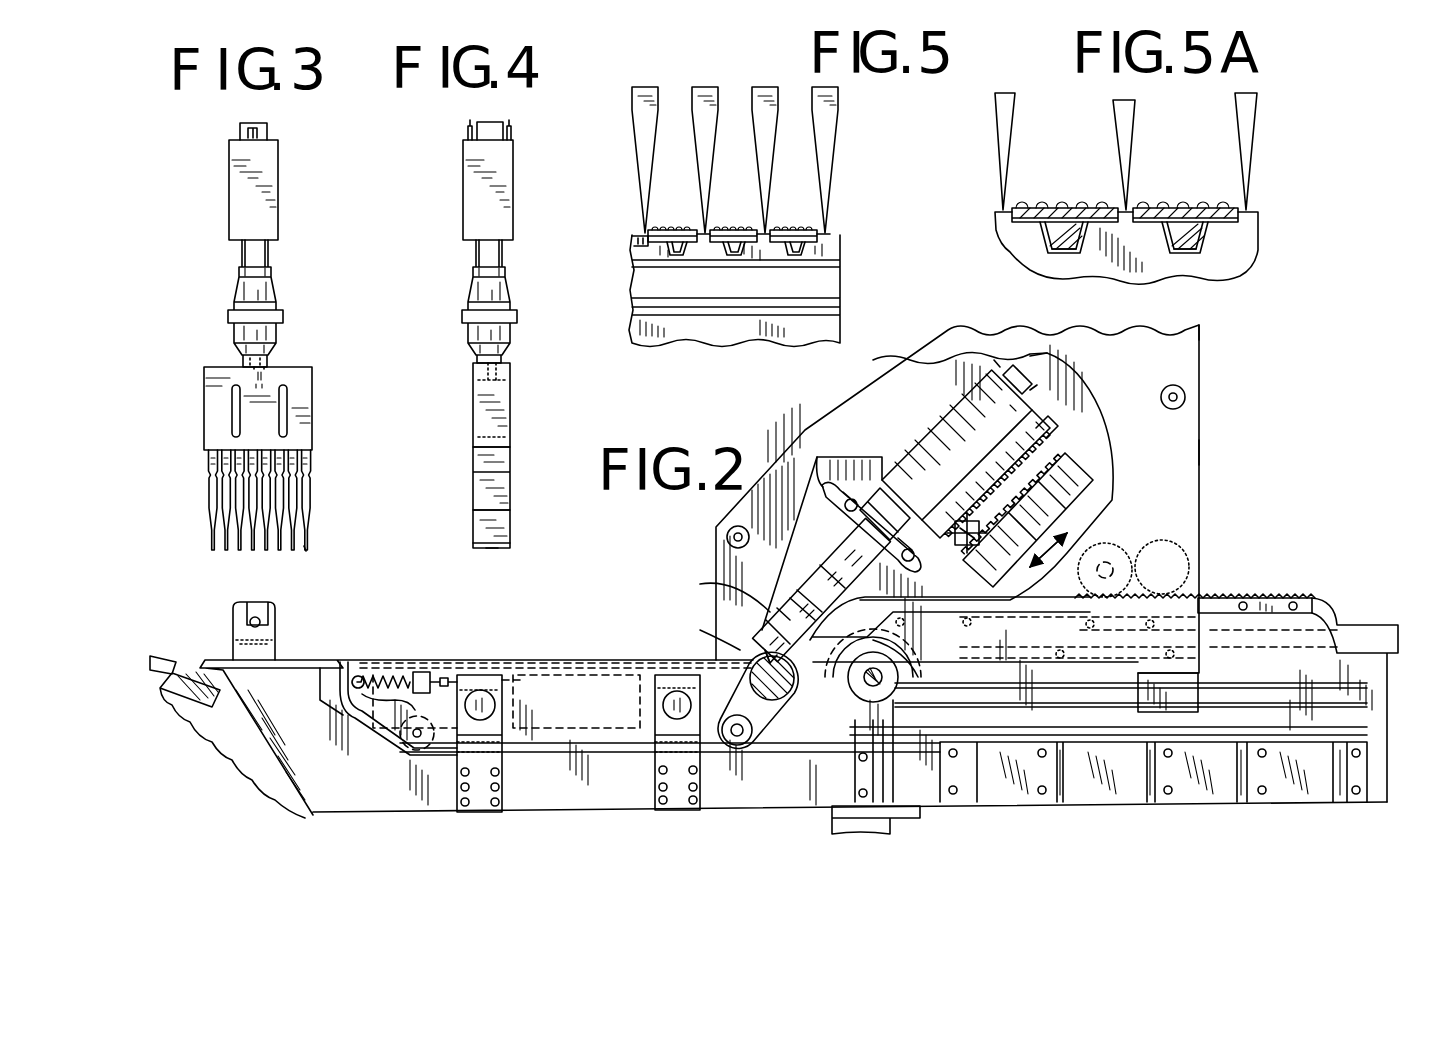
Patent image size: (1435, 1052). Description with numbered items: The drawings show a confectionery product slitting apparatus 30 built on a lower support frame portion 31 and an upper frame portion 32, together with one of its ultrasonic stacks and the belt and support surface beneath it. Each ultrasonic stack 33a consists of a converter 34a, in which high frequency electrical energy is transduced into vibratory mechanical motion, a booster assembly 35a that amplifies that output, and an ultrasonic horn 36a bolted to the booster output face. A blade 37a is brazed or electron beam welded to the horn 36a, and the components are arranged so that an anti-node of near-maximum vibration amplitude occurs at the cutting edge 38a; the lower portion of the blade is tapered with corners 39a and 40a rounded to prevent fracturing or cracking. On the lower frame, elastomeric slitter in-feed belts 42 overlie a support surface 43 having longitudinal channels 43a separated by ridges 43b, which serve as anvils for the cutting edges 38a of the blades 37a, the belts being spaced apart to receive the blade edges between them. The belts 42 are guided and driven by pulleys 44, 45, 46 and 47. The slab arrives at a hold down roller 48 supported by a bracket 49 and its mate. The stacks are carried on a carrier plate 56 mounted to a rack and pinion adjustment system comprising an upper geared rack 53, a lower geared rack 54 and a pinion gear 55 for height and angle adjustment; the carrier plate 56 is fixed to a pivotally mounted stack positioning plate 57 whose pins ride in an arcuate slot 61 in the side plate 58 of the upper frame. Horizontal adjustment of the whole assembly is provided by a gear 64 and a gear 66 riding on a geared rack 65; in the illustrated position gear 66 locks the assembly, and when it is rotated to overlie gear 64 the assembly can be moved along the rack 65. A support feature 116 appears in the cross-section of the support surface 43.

In FIG. 2, the confectionery product slitting apparatus 30 is at (1220, 349).
In FIG. 2, the lower support frame portion 31 is at (357, 800).
In FIG. 2, the upper frame portion 32 is at (1188, 452).
In FIG. 3, the ultrasonic stack 33a is at (218, 173).
In FIG. 4, the ultrasonic stack 33a is at (448, 167).
In FIG. 2, the ultrasonic stack 33a is at (940, 413).
In FIG. 3, the converter 34a is at (245, 202).
In FIG. 4, the converter 34a is at (480, 194).
In FIG. 3, the booster assembly 35a is at (237, 302).
In FIG. 4, the booster assembly 35a is at (470, 297).
In FIG. 2, the booster assembly 35a is at (850, 483).
In FIG. 3, the ultrasonic horn 36a is at (204, 398).
In FIG. 4, the ultrasonic horn 36a is at (473, 390).
In FIG. 2, the ultrasonic horn 36a is at (830, 567).
In FIG. 3, the blade 37a is at (208, 500).
In FIG. 4, the blade 37a is at (473, 488).
In FIG. 5, the blade 37a is at (822, 84).
In FIG. 2, the blade 37a is at (788, 596).
In FIG. 3, the cutting edge 38a is at (306, 550).
In FIG. 4, the cutting edge 38a is at (490, 548).
In FIG. 2, the cutting edge 38a is at (758, 652).
In FIG. 4, the rounded corner 39a is at (490, 548).
In FIG. 4, the rounded corner 40a is at (500, 548).
In FIG. 5, the elastomeric slitter in-feed belt 42 is at (792, 230).
In FIG. 2, the elastomeric slitter in-feed belt 42 is at (480, 660).
In FIG. 5, the support surface 43 is at (828, 250).
In FIG. 5A, the support surface 43 is at (1243, 233).
In FIG. 2, the support surface 43 is at (598, 666).
In FIG. 5, the longitudinal channel 43a is at (793, 257).
In FIG. 5A, the longitudinal channel 43a is at (1192, 237).
In FIG. 5, the ridge 43b is at (824, 232).
In FIG. 5A, the ridge 43b is at (1250, 210).
In FIG. 2, the pulley 44 is at (775, 694).
In FIG. 2, the pulley 45 is at (738, 735).
In FIG. 2, the pulley 46 is at (418, 748).
In FIG. 2, the pulley 47 is at (357, 663).
In FIG. 2, the hold down roller 48 is at (243, 603).
In FIG. 2, the bracket 49 is at (234, 624).
In FIG. 2, the upper geared rack 53 is at (1044, 431).
In FIG. 2, the lower geared rack 54 is at (1055, 487).
In FIG. 2, the pinion gear 55 is at (984, 522).
In FIG. 2, the carrier plate 56 is at (1038, 432).
In FIG. 2, the stack positioning plate 57 is at (875, 456).
In FIG. 2, the plate 58 is at (948, 338).
In FIG. 2, the arcuate slot 61 is at (822, 483).
In FIG. 2, the gear 64 is at (1122, 542).
In FIG. 2, the geared rack 65 is at (1283, 597).
In FIG. 2, the gear 66 is at (1187, 536).
In FIG. 5, the well 116 is at (670, 247).
In FIG. 5A, the well 116 is at (1193, 250).